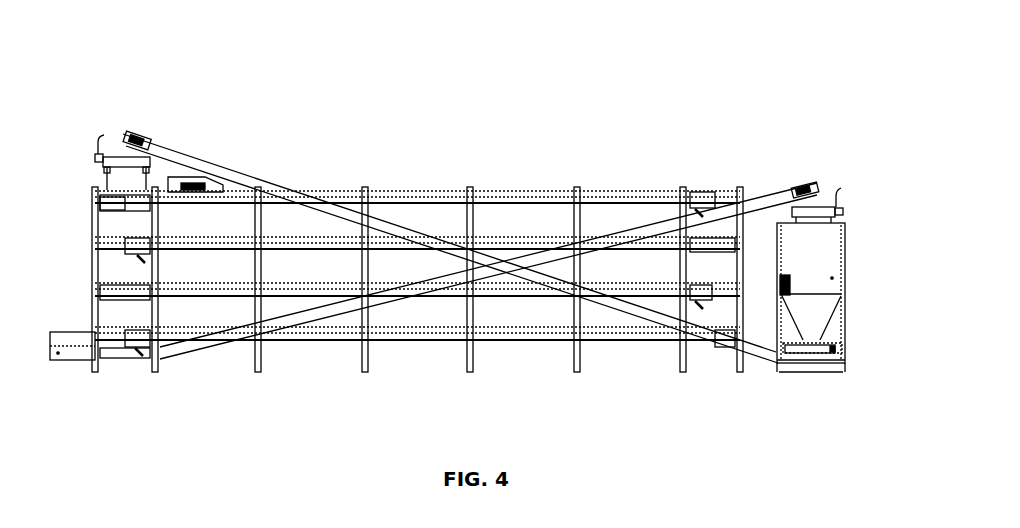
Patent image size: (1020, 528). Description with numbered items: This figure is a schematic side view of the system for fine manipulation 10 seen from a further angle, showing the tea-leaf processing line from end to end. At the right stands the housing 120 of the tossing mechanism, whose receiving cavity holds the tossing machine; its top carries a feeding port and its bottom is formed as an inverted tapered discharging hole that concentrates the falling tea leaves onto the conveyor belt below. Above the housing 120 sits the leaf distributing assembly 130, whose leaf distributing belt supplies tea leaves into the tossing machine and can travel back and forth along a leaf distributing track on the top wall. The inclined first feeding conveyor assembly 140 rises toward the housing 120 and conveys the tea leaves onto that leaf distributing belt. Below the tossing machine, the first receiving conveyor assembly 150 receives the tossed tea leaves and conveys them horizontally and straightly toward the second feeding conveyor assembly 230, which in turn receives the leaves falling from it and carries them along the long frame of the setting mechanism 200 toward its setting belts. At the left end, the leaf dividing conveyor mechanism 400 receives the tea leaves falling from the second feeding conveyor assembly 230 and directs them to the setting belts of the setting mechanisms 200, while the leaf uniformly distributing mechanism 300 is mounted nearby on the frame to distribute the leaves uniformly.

The system for fine manipulation 10 is at (40, 45).
The housing 120 is at (803, 258).
The leaf distributing assembly 130 is at (822, 208).
The first feeding conveyor assembly 140 is at (753, 205).
The first receiving conveyor assembly 150 is at (790, 332).
The setting mechanism 200 is at (320, 315).
The second feeding conveyor assembly 230 is at (259, 177).
The leaf uniformly distributing mechanism 300 is at (198, 185).
The leaf dividing conveyor mechanism 400 is at (113, 157).